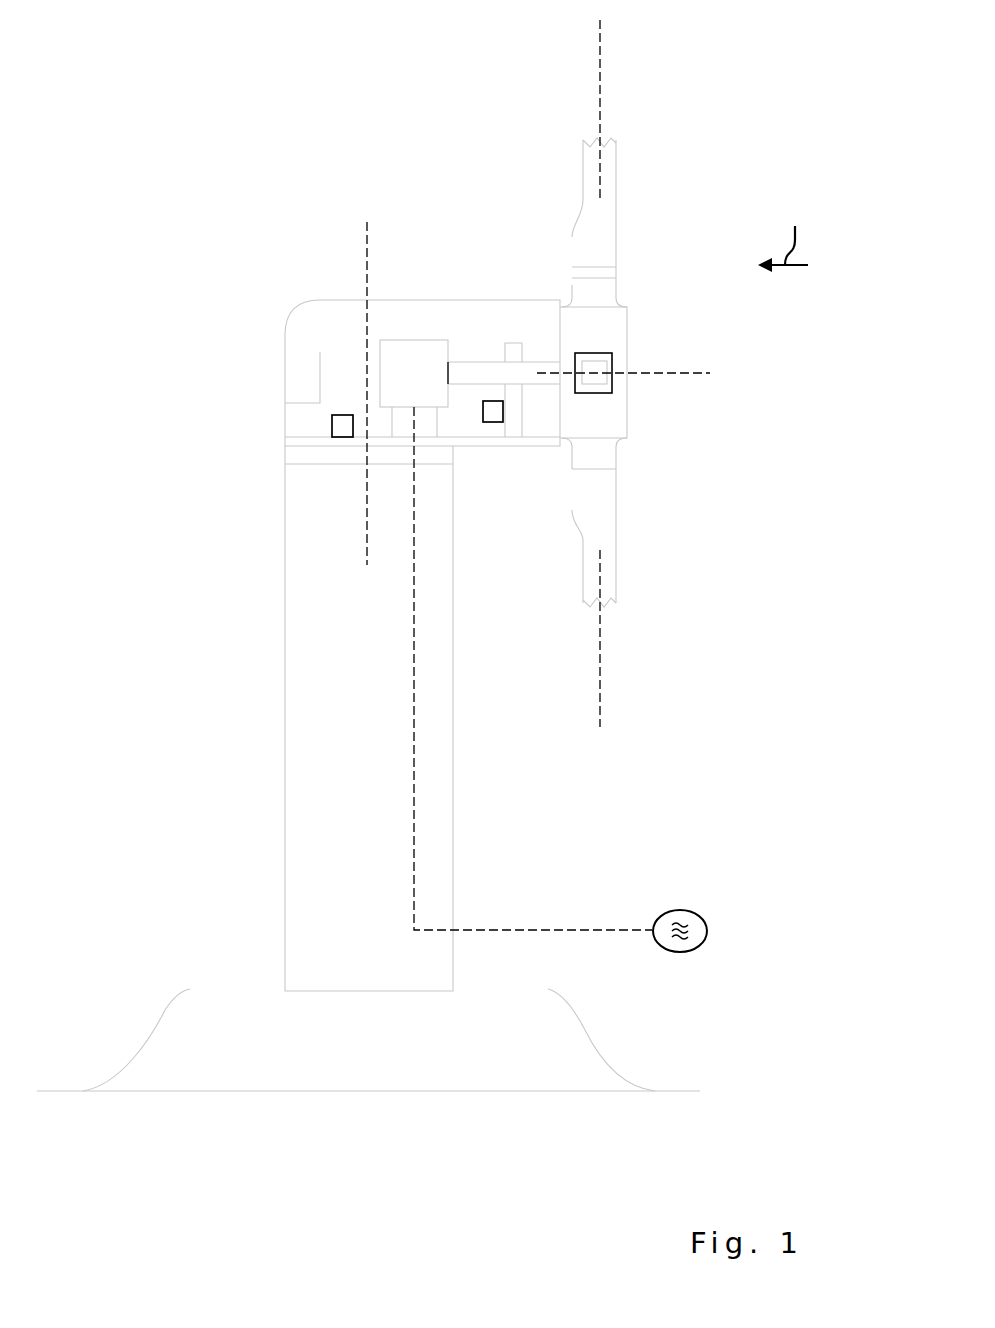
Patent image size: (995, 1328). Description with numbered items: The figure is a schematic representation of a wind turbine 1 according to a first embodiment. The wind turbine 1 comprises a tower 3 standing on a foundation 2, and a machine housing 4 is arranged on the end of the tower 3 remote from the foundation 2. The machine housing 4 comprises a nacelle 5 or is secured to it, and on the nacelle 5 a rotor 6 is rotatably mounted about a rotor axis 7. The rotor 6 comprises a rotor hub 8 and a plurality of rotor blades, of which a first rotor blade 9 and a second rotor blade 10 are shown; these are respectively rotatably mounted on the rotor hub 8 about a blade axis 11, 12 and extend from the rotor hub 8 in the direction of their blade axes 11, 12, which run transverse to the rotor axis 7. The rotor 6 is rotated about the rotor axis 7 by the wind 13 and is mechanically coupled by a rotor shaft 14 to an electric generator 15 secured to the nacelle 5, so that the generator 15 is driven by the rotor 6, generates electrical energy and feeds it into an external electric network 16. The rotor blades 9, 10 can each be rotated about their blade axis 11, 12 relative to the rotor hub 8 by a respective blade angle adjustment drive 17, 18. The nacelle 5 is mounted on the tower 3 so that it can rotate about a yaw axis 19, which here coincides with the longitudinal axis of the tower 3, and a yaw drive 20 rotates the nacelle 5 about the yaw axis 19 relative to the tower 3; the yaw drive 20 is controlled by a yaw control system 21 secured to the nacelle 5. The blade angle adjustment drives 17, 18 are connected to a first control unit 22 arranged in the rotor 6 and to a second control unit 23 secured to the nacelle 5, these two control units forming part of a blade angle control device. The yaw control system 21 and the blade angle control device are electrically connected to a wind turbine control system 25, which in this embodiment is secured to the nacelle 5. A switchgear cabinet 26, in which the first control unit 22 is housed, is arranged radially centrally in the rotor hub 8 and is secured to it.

The wind turbine 1 is at (277, 86).
The foundation 2 is at (157, 1019).
The tower 3 is at (290, 838).
The machine housing 4 is at (296, 313).
The nacelle 5 is at (304, 437).
The rotor 6 is at (627, 424).
The rotor axis 7 is at (692, 373).
The rotor hub 8 is at (627, 317).
The rotor blade 9 is at (617, 164).
The rotor blade 10 is at (617, 571).
The blade axis 11 is at (600, 46).
The blade axis 12 is at (600, 704).
The wind 13 is at (784, 235).
The rotor shaft 14 is at (470, 367).
The electric generator 15 is at (409, 347).
The external electric network 16 is at (701, 944).
The blade angle adjustment drive 17 is at (574, 269).
The blade angle adjustment drive 18 is at (610, 473).
The yaw axis 19 is at (367, 253).
The yaw drive 20 is at (293, 454).
The yaw control system 21 is at (343, 422).
The first control unit 22 is at (600, 382).
The second control unit 23 is at (492, 415).
The wind turbine control system 25 is at (293, 365).
The switchgear cabinet 26 is at (612, 354).